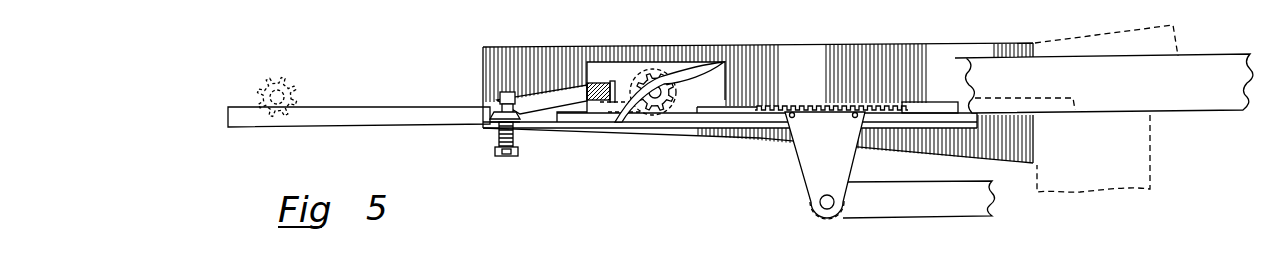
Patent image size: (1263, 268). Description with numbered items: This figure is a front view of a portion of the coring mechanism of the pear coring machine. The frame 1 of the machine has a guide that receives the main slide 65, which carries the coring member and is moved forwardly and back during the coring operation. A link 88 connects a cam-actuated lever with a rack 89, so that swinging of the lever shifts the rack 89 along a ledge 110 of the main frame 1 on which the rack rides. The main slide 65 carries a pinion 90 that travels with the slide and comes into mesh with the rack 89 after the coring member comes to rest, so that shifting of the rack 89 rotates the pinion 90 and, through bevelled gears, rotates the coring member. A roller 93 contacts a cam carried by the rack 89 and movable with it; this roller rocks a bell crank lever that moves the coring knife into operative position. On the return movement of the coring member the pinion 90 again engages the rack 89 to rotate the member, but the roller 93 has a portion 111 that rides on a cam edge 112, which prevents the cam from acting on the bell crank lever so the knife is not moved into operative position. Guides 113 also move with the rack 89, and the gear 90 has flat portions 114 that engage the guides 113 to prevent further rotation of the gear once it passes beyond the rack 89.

The frame 1 is at (552, 53).
The main slide 65 is at (1208, 103).
The link 88 is at (902, 200).
The rack 89 is at (810, 110).
The pinion 90 is at (655, 111).
The roller 93 is at (483, 119).
The ledge 110 is at (567, 129).
The portion of roller 111 is at (488, 107).
The cam edge 112 is at (770, 109).
The guides 113 is at (387, 112).
The flat portions 114 is at (651, 80).